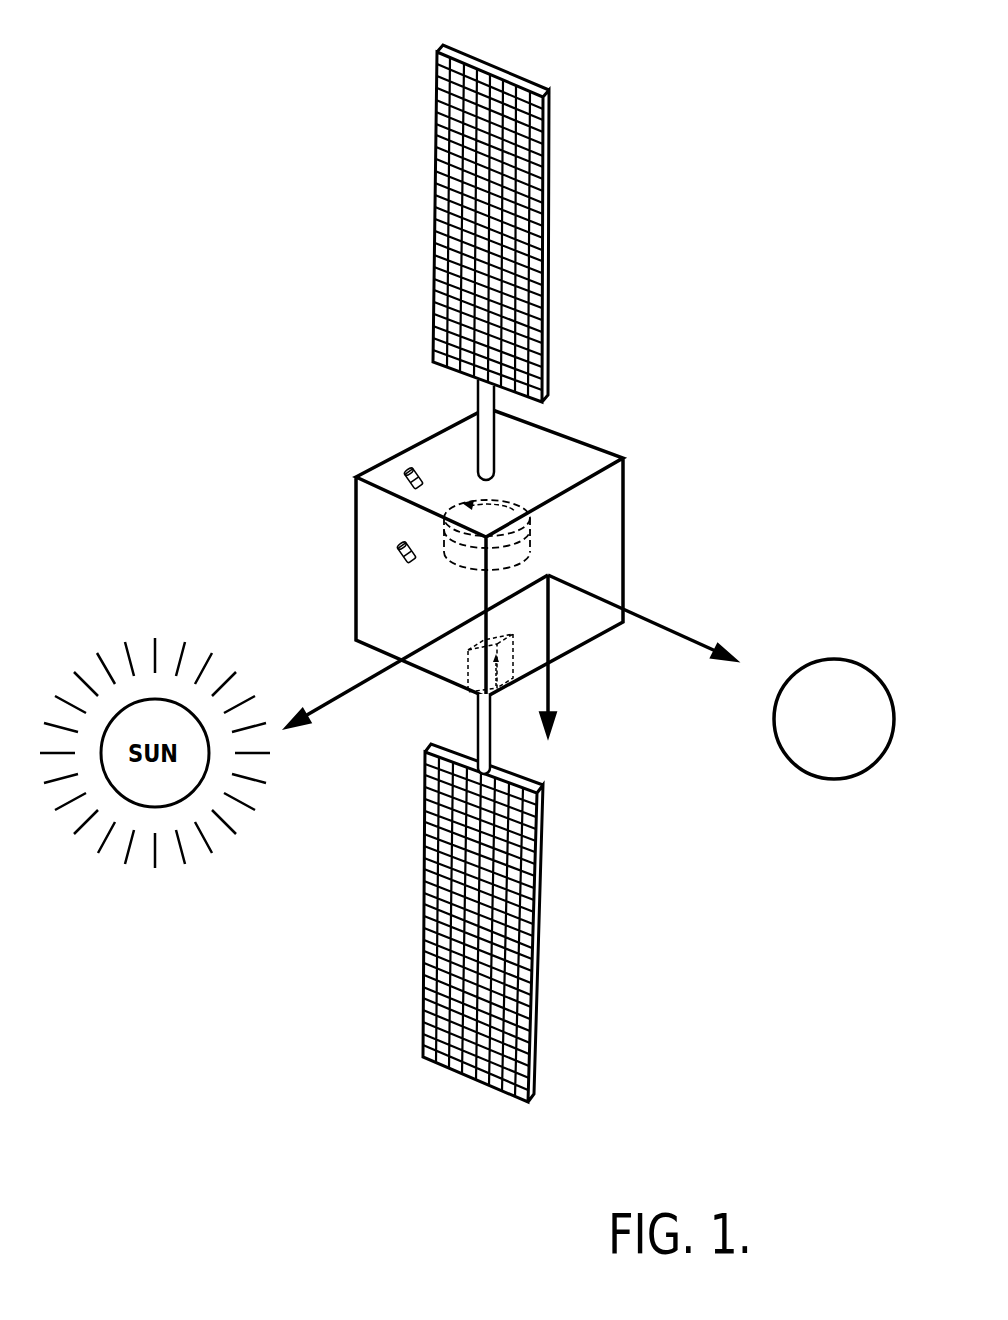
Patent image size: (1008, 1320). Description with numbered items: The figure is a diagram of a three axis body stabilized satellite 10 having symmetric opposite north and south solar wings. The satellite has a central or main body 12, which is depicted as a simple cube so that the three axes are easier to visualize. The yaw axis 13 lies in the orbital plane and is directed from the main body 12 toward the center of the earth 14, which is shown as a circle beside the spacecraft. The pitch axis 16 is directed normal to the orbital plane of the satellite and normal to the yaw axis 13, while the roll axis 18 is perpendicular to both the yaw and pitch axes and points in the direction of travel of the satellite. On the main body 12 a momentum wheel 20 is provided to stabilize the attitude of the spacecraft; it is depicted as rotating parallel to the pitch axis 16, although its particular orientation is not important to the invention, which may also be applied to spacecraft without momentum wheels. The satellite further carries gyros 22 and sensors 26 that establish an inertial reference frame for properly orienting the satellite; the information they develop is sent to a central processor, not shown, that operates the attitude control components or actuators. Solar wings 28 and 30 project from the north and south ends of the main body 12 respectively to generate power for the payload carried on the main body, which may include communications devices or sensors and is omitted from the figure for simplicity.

The satellite 10 is at (781, 224).
The main body 12 is at (625, 530).
The yaw axis 13 is at (650, 620).
The earth 14 is at (826, 658).
The pitch axis 16 is at (550, 698).
The roll axis 18 is at (358, 678).
The momentum wheel 20 is at (530, 533).
The gyros 22 is at (400, 560).
The sensors 26 is at (510, 645).
The solar wing 28 is at (510, 77).
The solar wing 30 is at (543, 877).